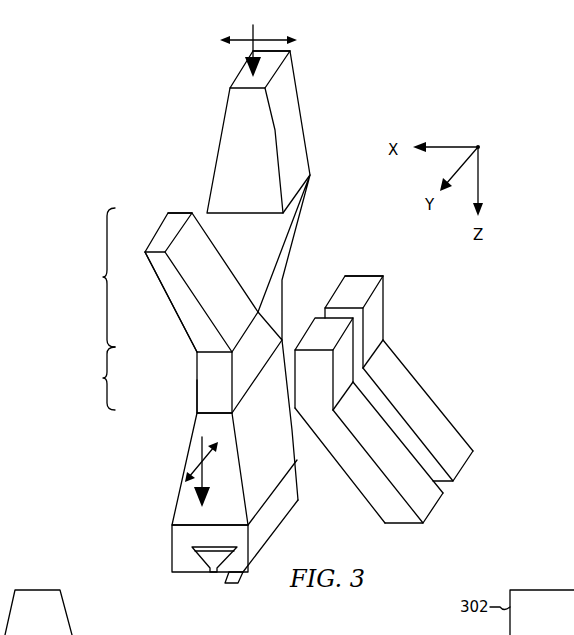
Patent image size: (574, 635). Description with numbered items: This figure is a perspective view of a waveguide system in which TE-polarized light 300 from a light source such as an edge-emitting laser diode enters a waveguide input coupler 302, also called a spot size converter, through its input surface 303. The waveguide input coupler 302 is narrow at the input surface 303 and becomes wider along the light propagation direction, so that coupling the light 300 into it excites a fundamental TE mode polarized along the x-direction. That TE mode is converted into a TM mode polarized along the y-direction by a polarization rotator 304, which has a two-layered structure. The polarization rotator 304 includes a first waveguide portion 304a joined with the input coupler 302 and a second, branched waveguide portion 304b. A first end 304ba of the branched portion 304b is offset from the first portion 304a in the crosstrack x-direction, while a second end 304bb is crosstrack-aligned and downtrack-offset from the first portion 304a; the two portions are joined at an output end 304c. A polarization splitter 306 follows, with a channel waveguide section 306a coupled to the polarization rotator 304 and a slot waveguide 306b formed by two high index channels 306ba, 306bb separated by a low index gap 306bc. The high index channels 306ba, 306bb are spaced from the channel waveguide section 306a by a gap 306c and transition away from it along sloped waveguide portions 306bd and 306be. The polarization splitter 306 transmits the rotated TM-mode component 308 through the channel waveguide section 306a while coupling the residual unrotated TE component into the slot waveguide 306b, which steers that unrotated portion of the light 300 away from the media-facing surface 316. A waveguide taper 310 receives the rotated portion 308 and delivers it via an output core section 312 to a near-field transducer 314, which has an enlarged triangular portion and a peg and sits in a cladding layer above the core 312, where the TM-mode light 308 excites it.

The TE-polarized light 300 is at (253, 33).
The waveguide input coupler 302 is at (218, 133).
The input surface 303 is at (292, 55).
The polarization rotator 304 is at (103, 277).
The first waveguide portion 304a is at (299, 218).
The second, branched waveguide portion 304b is at (178, 312).
The first end 304ba is at (167, 213).
The second end 304bb is at (190, 338).
The output end 304c is at (197, 355).
The polarization splitter 306 is at (103, 378).
The channel waveguide section 306a is at (197, 400).
The slot waveguide 306b is at (421, 383).
The high index channel 306ba is at (383, 300).
The high index channel 306bb is at (347, 361).
The low index gap 306bc is at (340, 300).
The sloped waveguide portion 306bd is at (473, 450).
The sloped waveguide portion 306be is at (436, 511).
The gap 306c is at (293, 337).
The TM-mode component 308 is at (197, 440).
The waveguide taper 310 is at (185, 470).
The output core section 312 is at (172, 540).
The near-field transducer 314 is at (205, 570).
The media-facing surface 316 is at (237, 583).